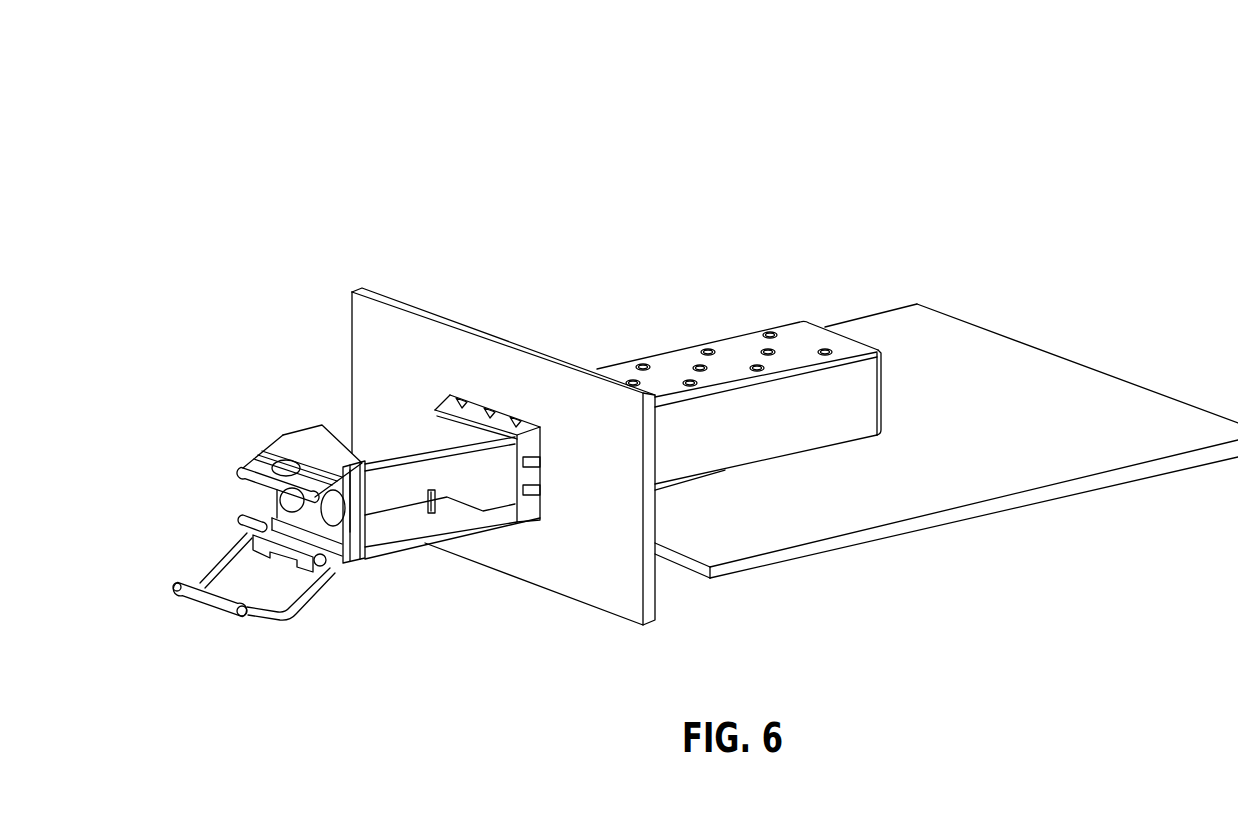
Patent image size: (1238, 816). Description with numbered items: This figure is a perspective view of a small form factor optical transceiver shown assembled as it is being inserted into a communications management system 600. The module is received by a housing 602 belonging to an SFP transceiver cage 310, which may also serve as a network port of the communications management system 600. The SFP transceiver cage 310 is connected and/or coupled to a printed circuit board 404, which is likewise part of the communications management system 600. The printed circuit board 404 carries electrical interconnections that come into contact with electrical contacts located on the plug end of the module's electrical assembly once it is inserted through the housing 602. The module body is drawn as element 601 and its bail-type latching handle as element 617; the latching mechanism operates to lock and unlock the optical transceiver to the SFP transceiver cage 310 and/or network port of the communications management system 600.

The communications management system 600 is at (1126, 122).
The SFP transceiver cage 310 is at (735, 334).
The printed circuit board 404 is at (978, 338).
The connector body 601 is at (418, 430).
The housing 602 is at (512, 489).
The bail latch 617 is at (186, 628).